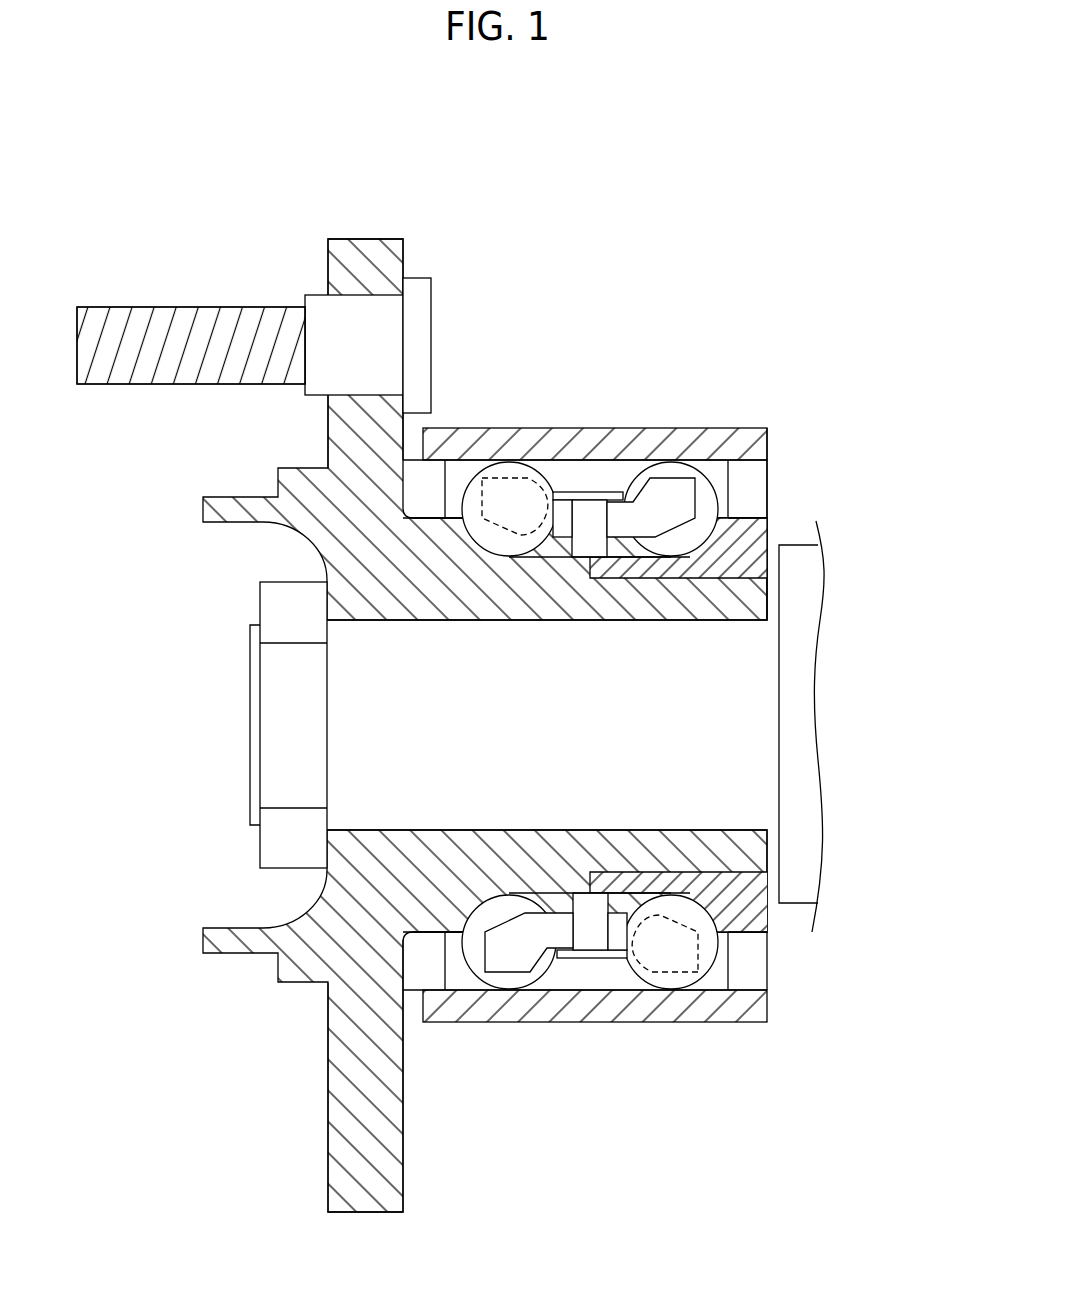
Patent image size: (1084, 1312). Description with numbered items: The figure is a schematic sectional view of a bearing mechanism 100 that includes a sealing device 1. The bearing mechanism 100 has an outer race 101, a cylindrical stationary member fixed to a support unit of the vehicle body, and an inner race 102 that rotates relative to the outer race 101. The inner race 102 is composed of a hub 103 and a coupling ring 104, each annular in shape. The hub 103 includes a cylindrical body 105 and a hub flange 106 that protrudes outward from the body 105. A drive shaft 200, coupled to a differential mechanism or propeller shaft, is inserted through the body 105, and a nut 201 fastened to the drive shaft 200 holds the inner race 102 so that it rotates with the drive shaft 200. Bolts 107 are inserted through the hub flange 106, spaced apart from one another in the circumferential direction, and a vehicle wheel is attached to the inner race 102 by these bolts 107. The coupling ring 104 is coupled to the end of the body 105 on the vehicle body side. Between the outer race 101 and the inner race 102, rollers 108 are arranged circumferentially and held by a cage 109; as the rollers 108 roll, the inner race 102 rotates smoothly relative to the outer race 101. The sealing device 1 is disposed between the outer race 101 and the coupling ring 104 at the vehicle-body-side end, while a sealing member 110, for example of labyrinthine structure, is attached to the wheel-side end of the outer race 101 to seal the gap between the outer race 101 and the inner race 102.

The bearing mechanism 100 is at (806, 234).
The sealing device 1 is at (772, 470).
The outer race 101 is at (593, 440).
The inner race 102 is at (652, 612).
The hub 103 is at (310, 970).
The coupling ring 104 is at (760, 537).
The body 105 is at (625, 830).
The hub flange 106 is at (370, 238).
The bolts 107 is at (173, 325).
The rollers 108 is at (502, 468).
The cage 109 is at (505, 972).
The sealing member 110 is at (417, 963).
The drive shaft 200 is at (745, 715).
The nut 201 is at (277, 712).